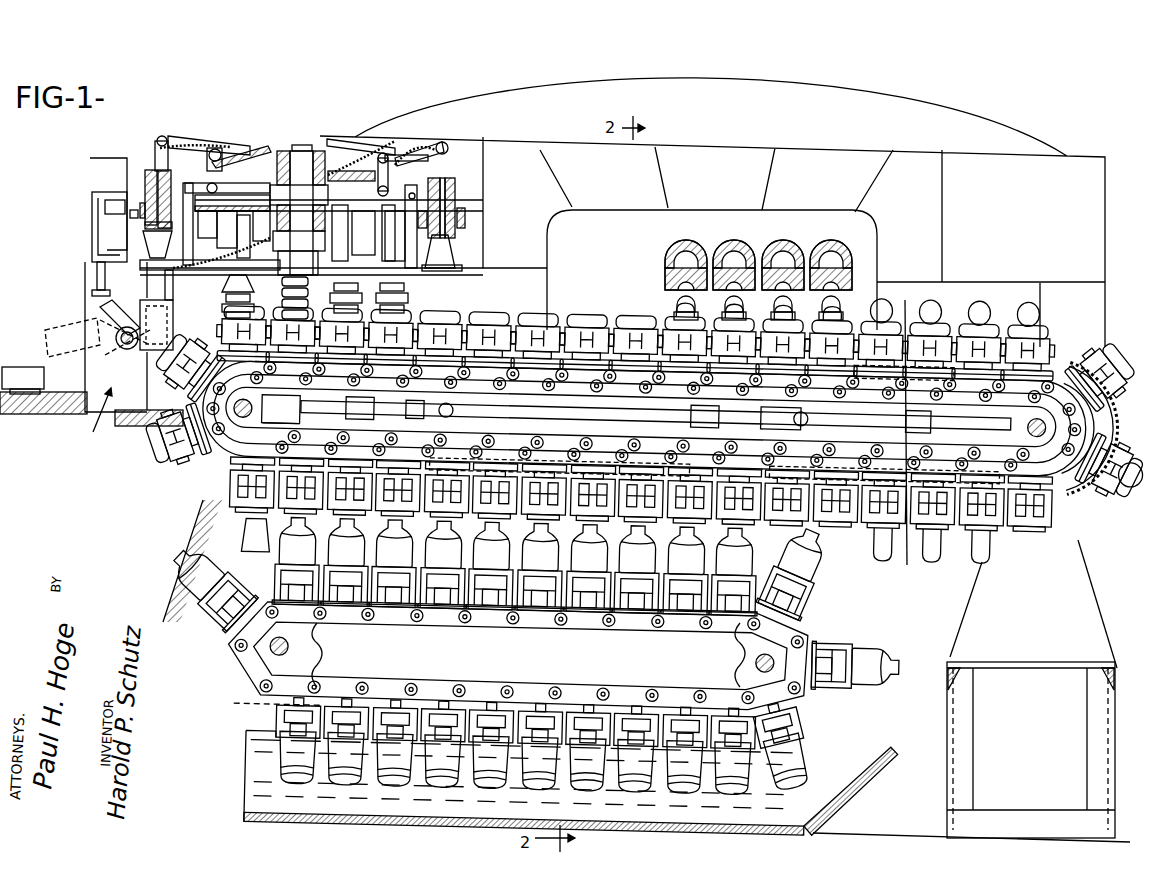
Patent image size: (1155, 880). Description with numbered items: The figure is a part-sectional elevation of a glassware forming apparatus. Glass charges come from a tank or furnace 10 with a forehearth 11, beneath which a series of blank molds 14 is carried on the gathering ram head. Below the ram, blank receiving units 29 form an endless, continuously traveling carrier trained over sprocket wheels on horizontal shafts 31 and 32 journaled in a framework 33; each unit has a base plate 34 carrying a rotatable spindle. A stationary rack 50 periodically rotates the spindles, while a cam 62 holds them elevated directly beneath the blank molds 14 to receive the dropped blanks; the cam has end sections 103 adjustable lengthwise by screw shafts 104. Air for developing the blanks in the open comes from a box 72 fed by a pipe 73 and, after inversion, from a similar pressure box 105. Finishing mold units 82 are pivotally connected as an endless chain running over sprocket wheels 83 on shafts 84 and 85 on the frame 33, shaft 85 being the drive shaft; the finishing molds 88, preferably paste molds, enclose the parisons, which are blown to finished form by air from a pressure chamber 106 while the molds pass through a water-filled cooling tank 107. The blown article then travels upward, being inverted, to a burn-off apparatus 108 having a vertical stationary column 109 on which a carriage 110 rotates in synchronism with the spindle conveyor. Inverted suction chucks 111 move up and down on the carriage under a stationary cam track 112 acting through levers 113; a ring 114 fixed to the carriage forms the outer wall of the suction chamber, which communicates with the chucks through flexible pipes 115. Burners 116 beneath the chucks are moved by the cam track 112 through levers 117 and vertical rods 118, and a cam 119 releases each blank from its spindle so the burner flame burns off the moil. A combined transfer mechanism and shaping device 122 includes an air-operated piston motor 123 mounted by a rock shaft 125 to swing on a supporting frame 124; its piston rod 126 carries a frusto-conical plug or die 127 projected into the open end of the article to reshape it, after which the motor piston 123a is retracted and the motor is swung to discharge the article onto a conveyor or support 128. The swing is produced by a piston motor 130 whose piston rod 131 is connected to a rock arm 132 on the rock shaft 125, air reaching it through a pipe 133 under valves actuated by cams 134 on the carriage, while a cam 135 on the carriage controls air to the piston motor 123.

The tank or furnace 10 is at (1093, 233).
The forehearth 11 is at (548, 265).
The blank molds 14 is at (665, 283).
The blank receiving units 29 is at (522, 320).
The horizontal shaft 31 is at (281, 420).
The horizontal shaft 32 is at (1015, 433).
The framework 33 is at (197, 549).
The base plate 34 is at (487, 383).
The stationary rack 50 is at (1098, 412).
The cam 62 is at (623, 421).
The air chamber or box 72 is at (940, 375).
The pipe 73 is at (900, 325).
The finishing mold units 82 is at (645, 620).
The sprocket wheels 83 is at (332, 650).
The shaft 84 is at (288, 661).
The drive shaft 85 is at (778, 676).
The finishing molds 88 is at (823, 590).
The end sections 103 is at (785, 405).
The screw shafts 104 is at (799, 427).
The pressure chamber or box 105 is at (995, 530).
The pressure chamber 106 is at (553, 467).
The tank 107 is at (880, 790).
The burn-off apparatus 108 is at (280, 140).
The vertical stationary column 109 is at (302, 150).
The carriage 110 is at (466, 222).
The inverted suction cups or chucks 111 is at (456, 240).
The stationary cam track 112 is at (370, 147).
The levers 113 is at (388, 150).
The ring 114 is at (299, 195).
The flexible pipes 115 is at (446, 152).
The burners 116 is at (463, 268).
The levers 117 is at (456, 190).
The vertical rods 118 is at (466, 210).
The cam 119 is at (281, 409).
The combined transfer mechanism and shaping device 122 is at (91, 423).
The air operated piston motor 123 is at (172, 308).
The motor piston 123a is at (176, 325).
The supporting frame 124 is at (175, 420).
The rock shaft 125 is at (114, 340).
The motor piston rod 126 is at (172, 276).
The plug or die 127 is at (152, 268).
The conveyor or other support 128 is at (62, 385).
The piston motor 130 is at (95, 243).
The piston rod 131 is at (103, 272).
The rock arm 132 is at (103, 312).
The pipe 133 is at (130, 152).
The cam or cams 134 is at (140, 210).
The cam 135 is at (135, 224).